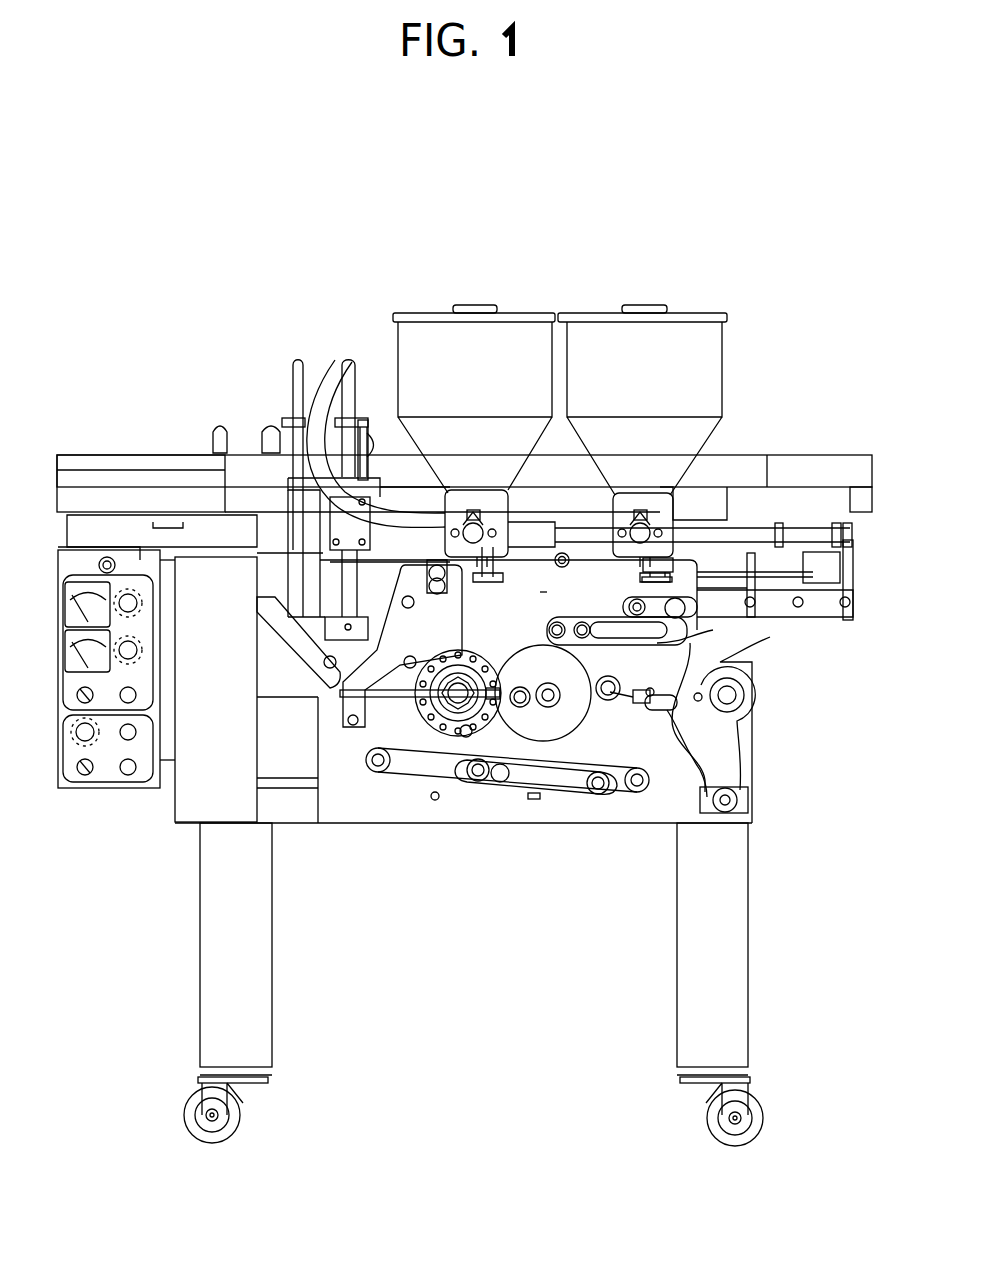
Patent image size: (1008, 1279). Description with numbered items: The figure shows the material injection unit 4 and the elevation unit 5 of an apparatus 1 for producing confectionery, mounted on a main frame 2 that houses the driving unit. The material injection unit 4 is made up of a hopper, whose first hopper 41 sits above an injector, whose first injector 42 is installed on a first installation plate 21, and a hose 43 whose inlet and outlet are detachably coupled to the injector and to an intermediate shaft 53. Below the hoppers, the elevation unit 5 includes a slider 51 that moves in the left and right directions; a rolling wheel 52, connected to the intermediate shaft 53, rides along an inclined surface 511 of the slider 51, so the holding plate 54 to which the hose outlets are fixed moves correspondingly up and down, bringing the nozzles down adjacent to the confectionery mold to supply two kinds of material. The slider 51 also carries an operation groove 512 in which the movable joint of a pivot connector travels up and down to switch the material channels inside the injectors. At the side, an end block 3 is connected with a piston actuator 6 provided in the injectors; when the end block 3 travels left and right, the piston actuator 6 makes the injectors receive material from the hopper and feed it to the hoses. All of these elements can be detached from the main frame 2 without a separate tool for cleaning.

The apparatus for producing confectionery 1 is at (190, 184).
The main frame 2 is at (105, 428).
The end block 3 is at (728, 515).
The material injection unit 4 is at (770, 322).
The elevation unit 5 is at (292, 588).
The piston actuator 6 is at (853, 590).
The first installation plate 21 is at (690, 598).
The first hopper 41 is at (488, 322).
The first injector 42 is at (515, 508).
The hose 43 is at (340, 358).
The slider 51 is at (335, 690).
The inclined surface 511 is at (400, 690).
The operation groove 512 is at (472, 775).
The rolling wheel 52 is at (257, 630).
The intermediate shaft 53 is at (385, 440).
The holding plate 54 is at (285, 427).